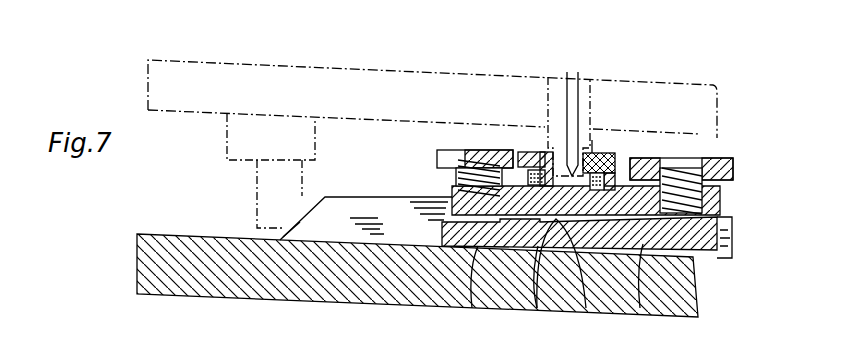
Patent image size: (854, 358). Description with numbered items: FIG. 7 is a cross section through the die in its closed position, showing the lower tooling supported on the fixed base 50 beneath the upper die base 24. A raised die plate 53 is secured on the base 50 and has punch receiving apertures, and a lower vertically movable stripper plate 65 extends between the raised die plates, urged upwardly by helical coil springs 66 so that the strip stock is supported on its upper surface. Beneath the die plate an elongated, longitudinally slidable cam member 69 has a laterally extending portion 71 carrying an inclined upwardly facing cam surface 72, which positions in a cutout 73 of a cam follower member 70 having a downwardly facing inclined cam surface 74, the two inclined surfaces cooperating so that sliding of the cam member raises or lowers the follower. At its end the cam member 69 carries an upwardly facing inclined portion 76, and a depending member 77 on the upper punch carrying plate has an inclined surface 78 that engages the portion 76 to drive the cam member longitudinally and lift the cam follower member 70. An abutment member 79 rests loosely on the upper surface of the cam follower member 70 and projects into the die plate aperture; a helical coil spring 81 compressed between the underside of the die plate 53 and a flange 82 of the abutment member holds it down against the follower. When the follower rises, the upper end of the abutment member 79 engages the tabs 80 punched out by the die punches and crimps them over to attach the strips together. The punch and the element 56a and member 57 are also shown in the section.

The upper die base 24 is at (204, 58).
The base 50 is at (435, 306).
The die plate 53 is at (524, 152).
The insert 56a is at (589, 151).
The pin 57 is at (547, 100).
The lower stripper plate 65 is at (449, 150).
The helical coil spring 66 is at (454, 179).
The cam member 69 is at (380, 206).
The cam follower member 70 is at (640, 308).
The laterally extending portion 71 is at (472, 308).
The inclined upwardly facing cam surface 72 is at (537, 308).
The cutout 73 is at (502, 220).
The downwardly facing inclined cam surface 74 is at (586, 308).
The upwardly facing inclined portion 76 is at (313, 207).
The depending member 77 is at (256, 191).
The inclined surface 78 is at (300, 222).
The abutment member 79 is at (594, 142).
The tab 80 is at (529, 183).
The helical coil spring 81 is at (540, 158).
The flange 82 is at (605, 184).